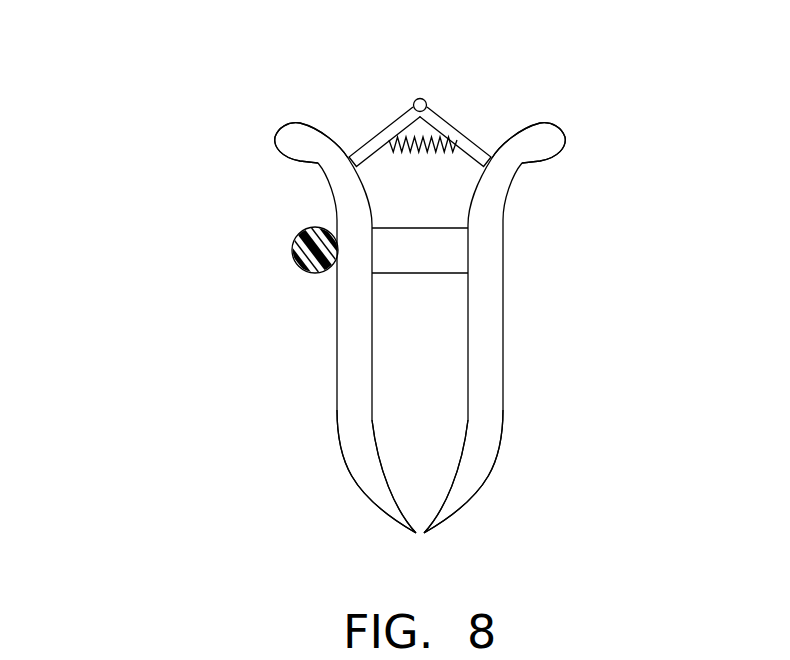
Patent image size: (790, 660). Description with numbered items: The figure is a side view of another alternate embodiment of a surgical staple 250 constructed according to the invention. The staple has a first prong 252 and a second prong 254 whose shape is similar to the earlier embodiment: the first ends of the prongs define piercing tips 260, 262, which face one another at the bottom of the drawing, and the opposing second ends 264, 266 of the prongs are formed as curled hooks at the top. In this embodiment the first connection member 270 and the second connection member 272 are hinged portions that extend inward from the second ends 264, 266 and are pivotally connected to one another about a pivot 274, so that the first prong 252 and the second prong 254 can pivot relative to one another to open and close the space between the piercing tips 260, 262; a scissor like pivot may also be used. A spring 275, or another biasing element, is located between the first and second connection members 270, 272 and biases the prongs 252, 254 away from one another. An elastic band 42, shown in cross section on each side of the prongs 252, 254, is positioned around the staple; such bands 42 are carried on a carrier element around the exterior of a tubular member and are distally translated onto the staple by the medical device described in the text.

The surgical staple 250 is at (146, 119).
The first prong 252 is at (350, 328).
The second prong 254 is at (495, 330).
The piercing tip 260 is at (415, 533).
The piercing tip 262 is at (424, 533).
The second end 264 is at (318, 163).
The second end 266 is at (522, 163).
The first connection member 270 is at (377, 135).
The second connection member 272 is at (461, 125).
The pivot 274 is at (423, 99).
The spring 275 is at (390, 143).
The elastic band 42 is at (297, 238).